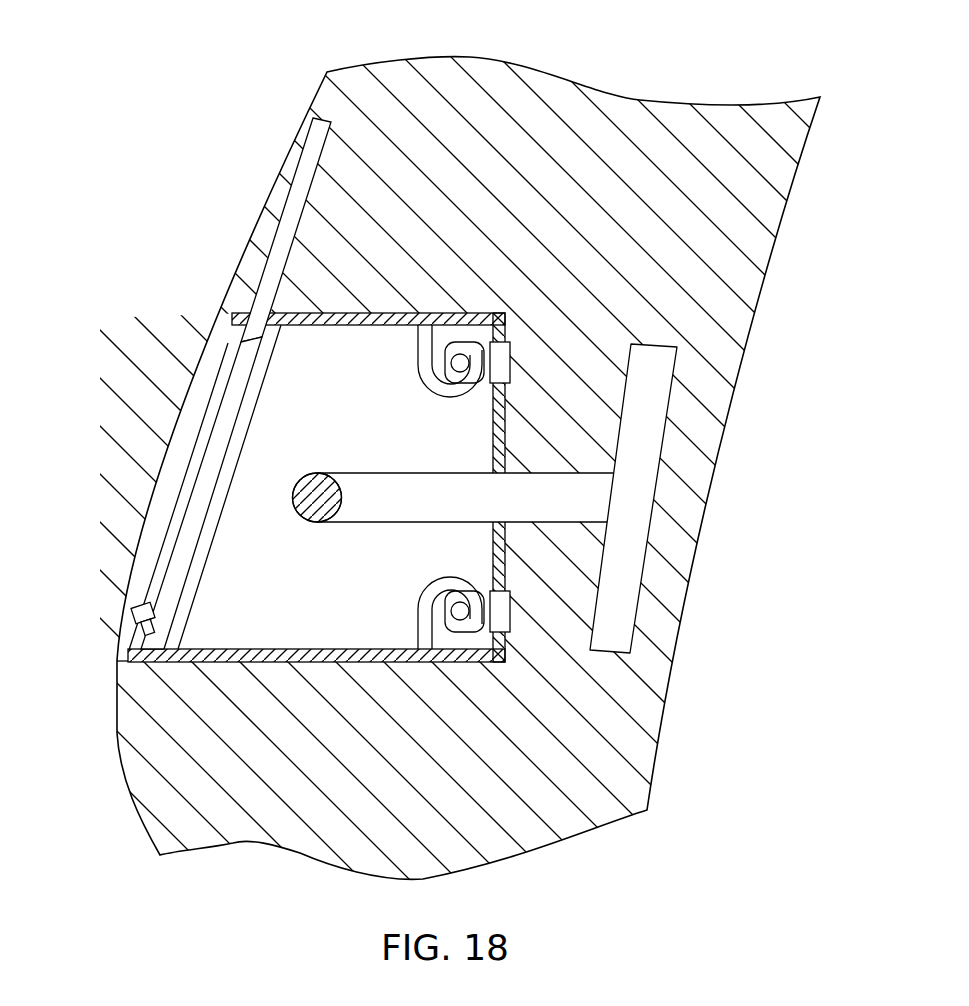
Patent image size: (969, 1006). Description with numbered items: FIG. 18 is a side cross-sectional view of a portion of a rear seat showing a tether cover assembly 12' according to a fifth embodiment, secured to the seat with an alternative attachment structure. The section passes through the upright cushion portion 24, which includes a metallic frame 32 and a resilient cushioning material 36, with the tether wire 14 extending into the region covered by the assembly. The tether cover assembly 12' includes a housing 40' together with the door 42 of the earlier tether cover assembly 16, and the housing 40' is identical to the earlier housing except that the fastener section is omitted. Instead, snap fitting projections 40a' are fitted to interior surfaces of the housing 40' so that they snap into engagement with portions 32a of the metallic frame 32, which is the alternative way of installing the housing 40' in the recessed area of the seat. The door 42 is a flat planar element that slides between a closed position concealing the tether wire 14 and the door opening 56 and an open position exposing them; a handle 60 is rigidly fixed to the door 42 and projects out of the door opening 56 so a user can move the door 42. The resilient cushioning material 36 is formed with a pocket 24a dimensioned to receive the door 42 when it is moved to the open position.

The tether cover assembly 12' is at (484, 503).
The tether wire 14 is at (552, 500).
The tether cover assembly 16 is at (336, 309).
The upright cushion portion 24 is at (662, 100).
The pocket 24a is at (300, 207).
The metallic frame 32 is at (647, 392).
The portions of the metallic frame 32a is at (458, 362).
The resilient cushioning material 36 is at (540, 123).
The housing 40' is at (311, 698).
The snap fitting projections 40a' is at (421, 487).
The door 42 is at (208, 424).
The door opening 56 is at (183, 515).
The handle 60 is at (131, 606).